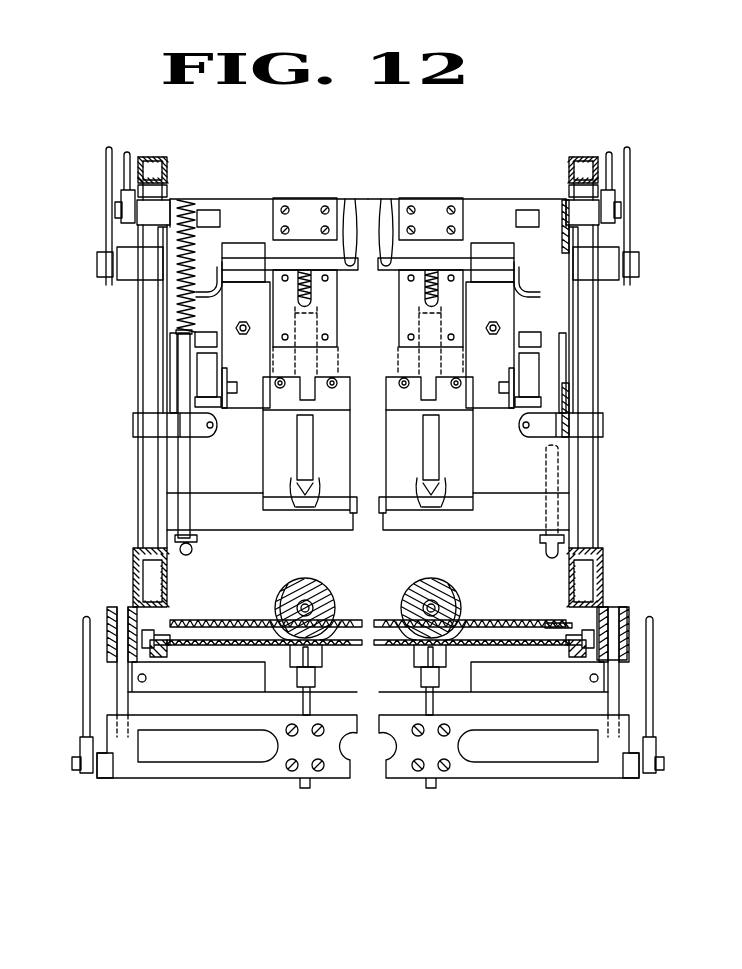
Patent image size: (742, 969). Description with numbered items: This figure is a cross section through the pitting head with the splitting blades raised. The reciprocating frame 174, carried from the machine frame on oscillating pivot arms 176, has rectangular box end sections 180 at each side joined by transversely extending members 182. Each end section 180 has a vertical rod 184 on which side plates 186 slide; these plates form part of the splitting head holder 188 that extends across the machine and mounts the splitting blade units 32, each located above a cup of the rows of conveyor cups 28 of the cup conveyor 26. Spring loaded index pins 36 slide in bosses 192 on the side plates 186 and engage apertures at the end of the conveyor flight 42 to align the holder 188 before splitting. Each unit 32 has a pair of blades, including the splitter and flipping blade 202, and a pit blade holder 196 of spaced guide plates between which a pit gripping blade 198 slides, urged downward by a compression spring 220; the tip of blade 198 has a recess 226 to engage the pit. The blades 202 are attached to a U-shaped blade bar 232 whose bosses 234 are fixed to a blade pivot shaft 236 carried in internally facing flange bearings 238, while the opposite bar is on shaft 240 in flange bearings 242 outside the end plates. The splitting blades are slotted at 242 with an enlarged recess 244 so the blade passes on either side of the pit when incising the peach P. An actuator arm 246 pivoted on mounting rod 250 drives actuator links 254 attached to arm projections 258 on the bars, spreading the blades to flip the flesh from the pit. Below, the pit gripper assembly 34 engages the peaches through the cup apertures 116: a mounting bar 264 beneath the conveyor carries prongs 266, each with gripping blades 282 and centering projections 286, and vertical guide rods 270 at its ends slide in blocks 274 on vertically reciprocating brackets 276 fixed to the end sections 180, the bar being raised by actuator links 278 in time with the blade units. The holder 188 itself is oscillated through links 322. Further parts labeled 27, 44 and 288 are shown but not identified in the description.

The oscillating pivot arms 176 is at (104, 224).
The links 322 is at (125, 153).
The flange bearings 242 is at (165, 256).
The bosses 192 is at (197, 197).
The rectangular box end sections 180 is at (142, 362).
The vertical rod 184 is at (150, 319).
The blade pivot shaft 236 is at (180, 293).
The internally facing flange bearings 238 is at (195, 237).
The bosses 234 is at (243, 250).
The compression spring 220 is at (305, 272).
The shaft 240 is at (384, 257).
The splitting head holder 188 is at (485, 197).
The pit blade holder 196 is at (410, 295).
The U-shaped blade bar 232 is at (392, 355).
The side plates 186 is at (180, 340).
The actuator links 254 is at (520, 343).
The mounting rod 250 is at (562, 355).
The actuator arm 246 is at (552, 377).
The arm projections 258 is at (532, 407).
The conveyor cups 28 is at (603, 370).
The pit gripping blade 198 is at (305, 435).
The splitter and flipping blade 202 is at (278, 468).
The index pins 36 is at (183, 485).
The splitting blade units 32 is at (262, 502).
The transversely extending members 182 is at (525, 532).
The reciprocating frame 174 is at (132, 555).
The vertically reciprocating brackets 276 is at (603, 558).
The recess 226 is at (303, 500).
The enlarged recess 244 is at (315, 500).
The peach P is at (303, 582).
The cup apertures 116 is at (283, 605).
The spool cradle 27 is at (328, 610).
The conveyor flight 42 is at (233, 618).
The fastening bolt 44 is at (150, 638).
The pit gripper assembly 34 is at (287, 657).
The cup conveyor 26 is at (572, 618).
The end strip 288 is at (490, 628).
The prongs 266 is at (292, 673).
The gripping blades 282 is at (307, 700).
The projections 286 is at (432, 653).
The mounting bar 264 is at (381, 773).
The actuator links 278 is at (85, 683).
The vertical guide rod 270 is at (612, 697).
The block 274 is at (623, 610).